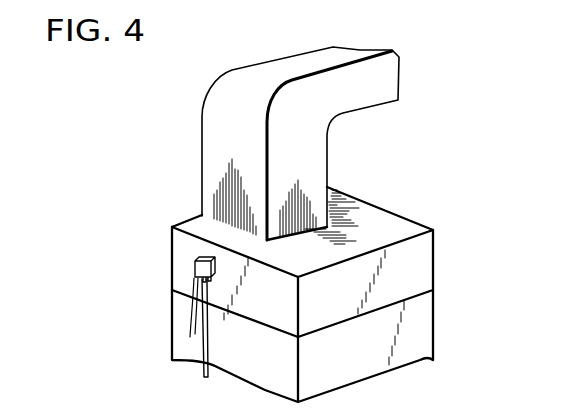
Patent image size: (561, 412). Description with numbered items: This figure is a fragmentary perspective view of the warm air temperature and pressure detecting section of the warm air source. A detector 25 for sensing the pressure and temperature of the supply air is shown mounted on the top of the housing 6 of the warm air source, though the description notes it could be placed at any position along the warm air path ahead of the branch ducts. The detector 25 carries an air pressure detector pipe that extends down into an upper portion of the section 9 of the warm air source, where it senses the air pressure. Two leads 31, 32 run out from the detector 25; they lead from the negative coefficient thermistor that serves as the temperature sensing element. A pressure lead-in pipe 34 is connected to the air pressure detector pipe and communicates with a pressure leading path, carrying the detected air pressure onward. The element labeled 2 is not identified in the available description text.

The L-shaped arm 2 is at (208, 162).
The housing 6 is at (427, 323).
The section 9 is at (436, 344).
The detector 25 is at (193, 262).
The lead 31 is at (189, 315).
The lead 32 is at (190, 337).
The pressure lead-in pipe 34 is at (209, 362).